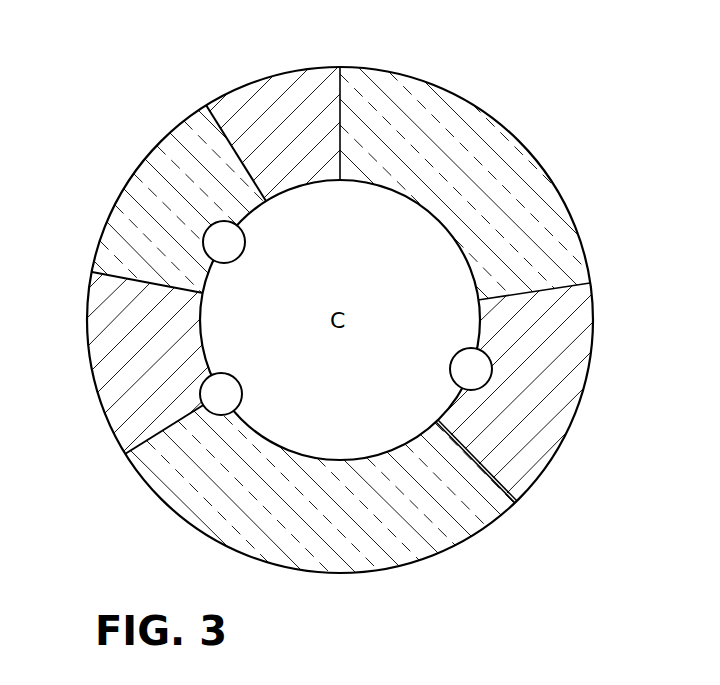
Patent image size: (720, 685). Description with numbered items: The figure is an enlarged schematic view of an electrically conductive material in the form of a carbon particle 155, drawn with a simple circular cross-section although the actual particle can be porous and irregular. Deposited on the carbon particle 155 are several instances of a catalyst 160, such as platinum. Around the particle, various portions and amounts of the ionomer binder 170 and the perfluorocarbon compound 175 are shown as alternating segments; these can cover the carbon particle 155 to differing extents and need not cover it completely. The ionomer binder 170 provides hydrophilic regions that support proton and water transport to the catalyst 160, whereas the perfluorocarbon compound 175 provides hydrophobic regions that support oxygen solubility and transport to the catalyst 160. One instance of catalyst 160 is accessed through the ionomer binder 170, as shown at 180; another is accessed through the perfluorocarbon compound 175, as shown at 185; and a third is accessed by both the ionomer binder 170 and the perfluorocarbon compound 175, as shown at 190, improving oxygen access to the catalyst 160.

The carbon particle 155 is at (283, 358).
The catalyst 160 is at (346, 327).
The ionomer binder 170 is at (513, 133).
The perfluorocarbon compound 175 is at (274, 74).
The catalyst instance accessed by ionomer binder 180 is at (245, 240).
The catalyst instance accessed by perfluorocarbon compound 185 is at (450, 370).
The catalyst instance accessed by both ionomer binder and perfluorocarbon compound 190 is at (242, 393).